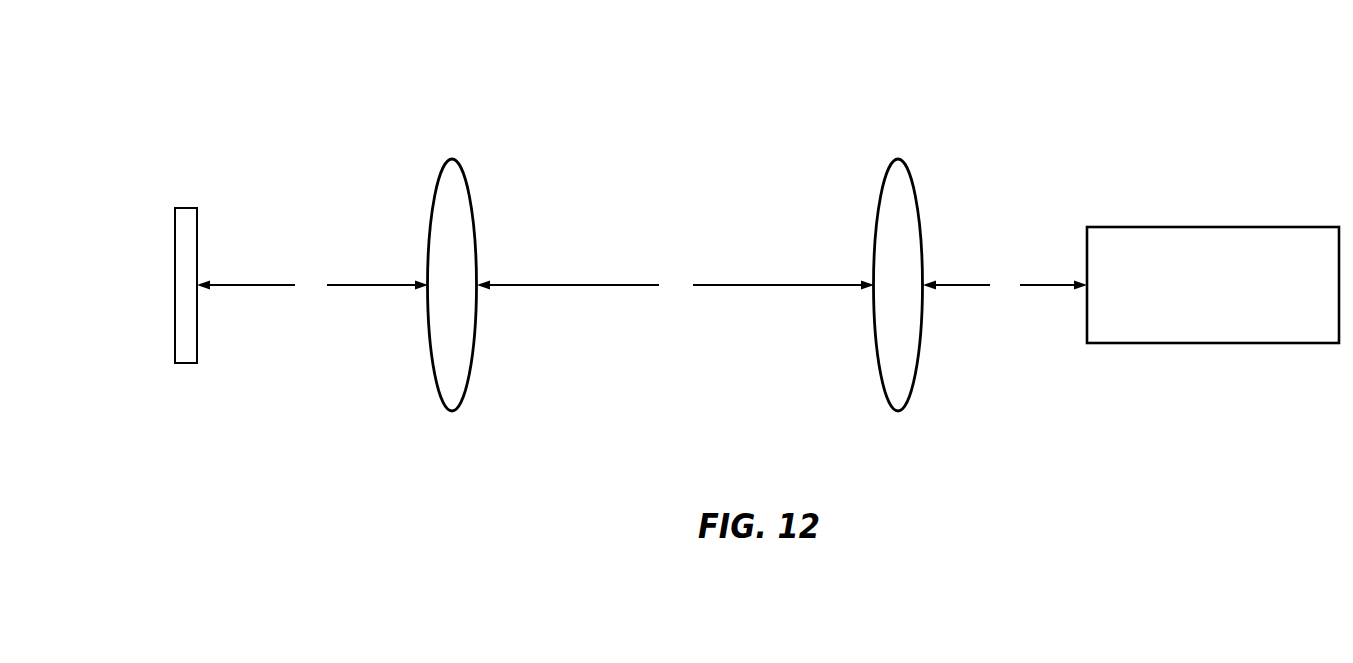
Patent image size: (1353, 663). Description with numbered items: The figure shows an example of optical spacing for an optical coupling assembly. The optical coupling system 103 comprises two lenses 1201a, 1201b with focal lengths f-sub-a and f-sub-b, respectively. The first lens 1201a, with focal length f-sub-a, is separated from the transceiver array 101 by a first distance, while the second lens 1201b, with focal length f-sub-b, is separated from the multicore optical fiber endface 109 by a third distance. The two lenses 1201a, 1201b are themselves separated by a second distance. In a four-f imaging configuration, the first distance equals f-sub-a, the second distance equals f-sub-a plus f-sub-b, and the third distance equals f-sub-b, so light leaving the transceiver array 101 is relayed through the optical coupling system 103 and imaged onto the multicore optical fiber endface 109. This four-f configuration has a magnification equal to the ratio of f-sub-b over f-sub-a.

The light source 101 is at (183, 362).
The optical coupling system 103 is at (576, 95).
The lens 1201a is at (447, 200).
The lens 1201b is at (895, 200).
The detector 109 is at (1216, 318).